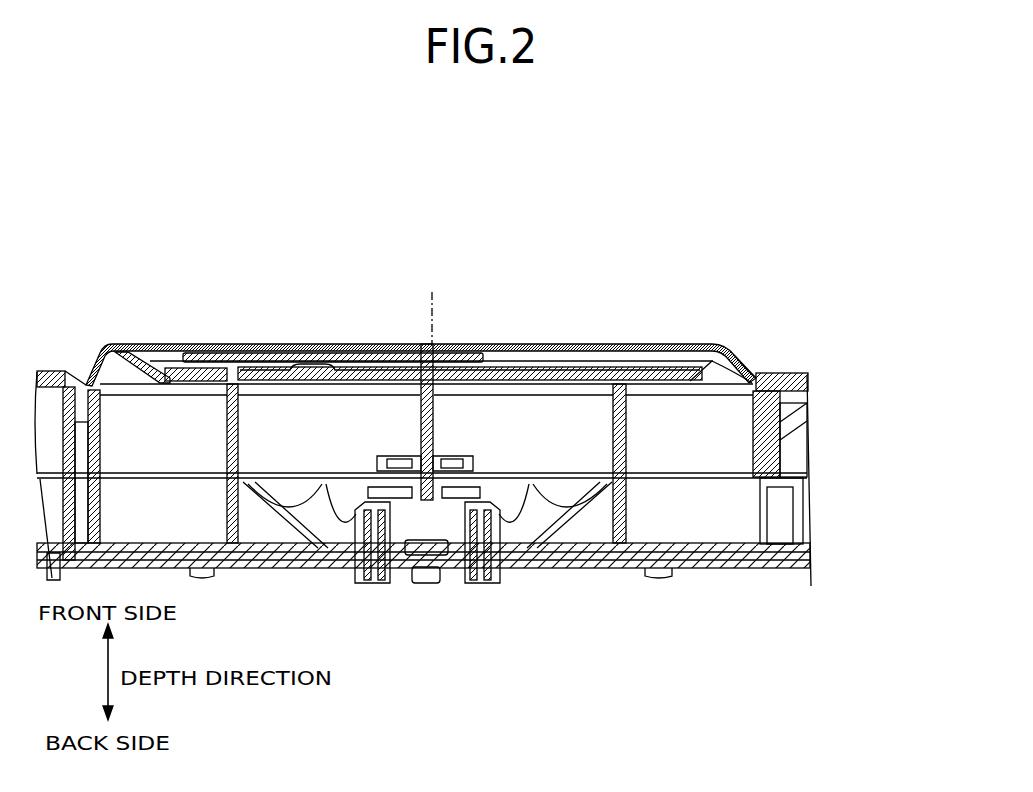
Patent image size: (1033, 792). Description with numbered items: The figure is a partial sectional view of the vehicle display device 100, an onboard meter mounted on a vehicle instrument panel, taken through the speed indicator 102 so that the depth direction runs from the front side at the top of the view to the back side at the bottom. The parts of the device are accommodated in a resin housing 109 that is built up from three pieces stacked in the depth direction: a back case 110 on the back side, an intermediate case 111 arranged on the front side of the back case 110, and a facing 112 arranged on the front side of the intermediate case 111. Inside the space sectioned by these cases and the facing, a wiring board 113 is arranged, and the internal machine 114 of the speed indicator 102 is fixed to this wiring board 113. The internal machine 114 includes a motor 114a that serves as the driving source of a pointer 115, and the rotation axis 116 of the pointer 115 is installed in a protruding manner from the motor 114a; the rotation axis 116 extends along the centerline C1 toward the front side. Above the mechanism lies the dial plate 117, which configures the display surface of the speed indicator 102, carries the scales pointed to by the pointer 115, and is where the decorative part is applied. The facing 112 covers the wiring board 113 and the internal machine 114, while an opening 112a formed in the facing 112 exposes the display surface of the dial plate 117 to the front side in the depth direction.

The vehicle display device 100 is at (158, 318).
The speed indicator 102 is at (541, 342).
The pointer 115 is at (212, 343).
The dial plate 117 is at (263, 376).
The center axis C1 is at (434, 300).
The housing 109 is at (886, 350).
The facing 112 is at (801, 371).
The opening 112a is at (758, 360).
The intermediate case 111 is at (810, 413).
The back case 110 is at (812, 501).
The rotation axis 116 is at (443, 399).
The wiring board 113 is at (628, 568).
The internal machine 114 is at (455, 538).
The motor 114a is at (410, 572).